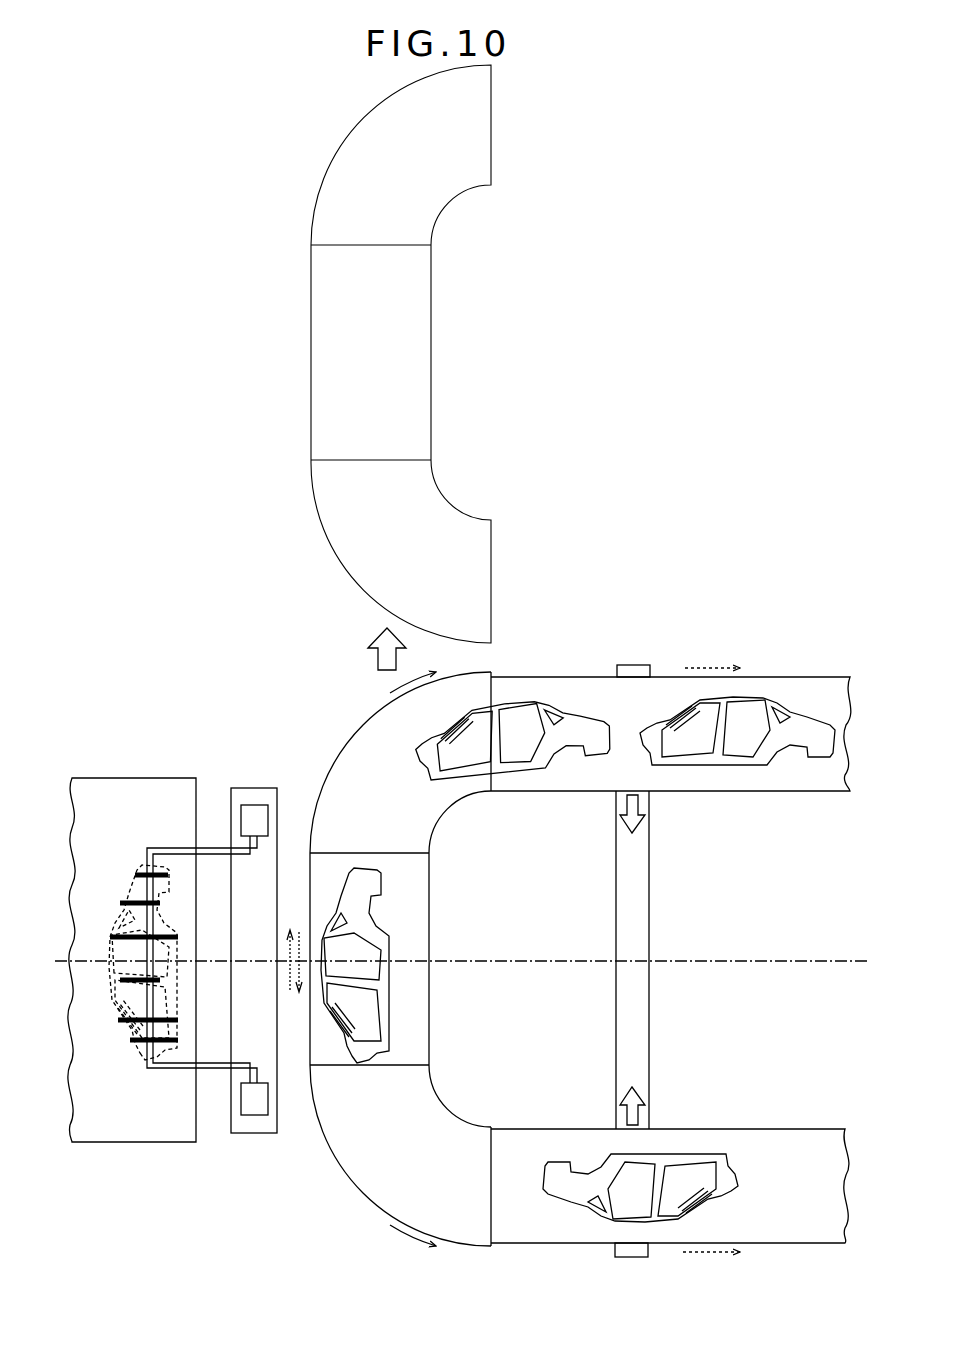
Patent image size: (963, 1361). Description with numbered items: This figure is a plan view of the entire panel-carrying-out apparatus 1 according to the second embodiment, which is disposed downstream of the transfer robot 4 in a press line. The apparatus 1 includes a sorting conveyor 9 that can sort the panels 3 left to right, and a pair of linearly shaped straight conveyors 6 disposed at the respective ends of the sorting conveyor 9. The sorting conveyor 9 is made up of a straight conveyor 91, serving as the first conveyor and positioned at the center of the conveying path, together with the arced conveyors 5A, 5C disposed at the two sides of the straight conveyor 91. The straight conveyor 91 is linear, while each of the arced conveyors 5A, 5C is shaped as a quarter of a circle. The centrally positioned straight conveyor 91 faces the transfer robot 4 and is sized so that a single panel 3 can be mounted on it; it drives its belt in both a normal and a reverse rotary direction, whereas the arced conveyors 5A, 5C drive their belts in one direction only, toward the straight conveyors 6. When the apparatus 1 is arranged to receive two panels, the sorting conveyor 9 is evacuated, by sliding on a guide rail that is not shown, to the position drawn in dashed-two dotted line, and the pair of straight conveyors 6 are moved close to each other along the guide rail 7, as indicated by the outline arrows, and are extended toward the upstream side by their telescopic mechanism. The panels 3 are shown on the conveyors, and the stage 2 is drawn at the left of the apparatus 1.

The panel-carrying-out apparatus 1 is at (782, 540).
The processing stage 2 is at (140, 790).
The panel 3 is at (108, 992).
The transfer robot 4 is at (253, 790).
The arced conveyor 5A is at (357, 748).
The arced conveyor 5C is at (352, 1176).
The straight conveyor 6 is at (815, 690).
The guide rail 7 is at (643, 905).
The sorting conveyor 9 is at (311, 350).
The straight conveyor 91 is at (425, 1020).